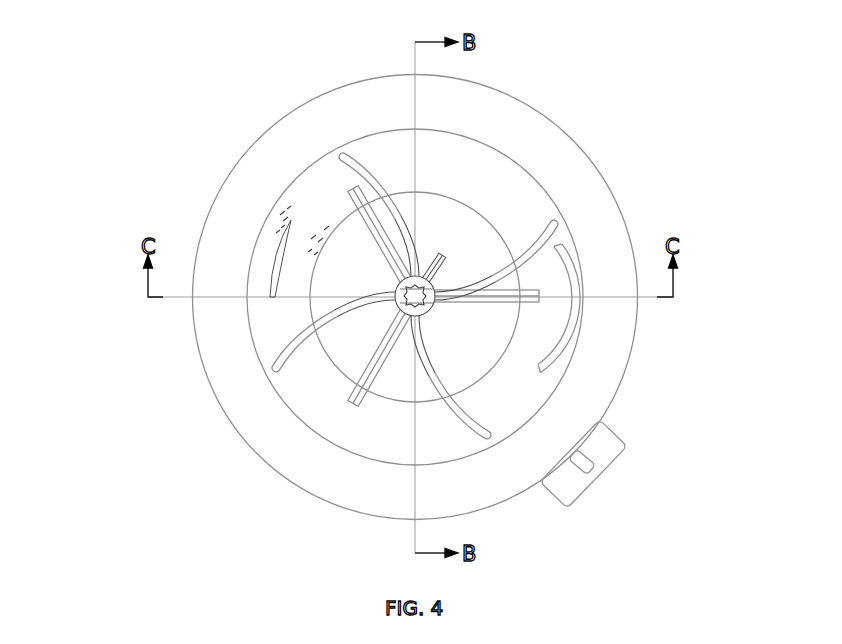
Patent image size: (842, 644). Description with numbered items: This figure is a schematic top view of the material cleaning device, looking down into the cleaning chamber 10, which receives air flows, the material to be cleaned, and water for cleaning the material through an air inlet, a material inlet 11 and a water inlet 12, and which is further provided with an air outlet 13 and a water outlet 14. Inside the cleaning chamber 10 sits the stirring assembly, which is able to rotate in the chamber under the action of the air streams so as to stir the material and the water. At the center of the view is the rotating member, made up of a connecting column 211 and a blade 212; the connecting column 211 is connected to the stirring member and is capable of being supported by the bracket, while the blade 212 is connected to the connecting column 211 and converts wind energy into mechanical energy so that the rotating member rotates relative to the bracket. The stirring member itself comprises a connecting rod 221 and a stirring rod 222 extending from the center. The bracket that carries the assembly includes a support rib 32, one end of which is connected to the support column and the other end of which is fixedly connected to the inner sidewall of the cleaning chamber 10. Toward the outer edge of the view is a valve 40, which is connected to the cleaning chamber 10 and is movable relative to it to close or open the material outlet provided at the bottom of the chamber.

The cleaning chamber 10 is at (503, 128).
The material inlet 11 is at (562, 257).
The water inlet 12 is at (273, 268).
The air outlet 13 is at (281, 216).
The water outlet 14 is at (321, 230).
The support rib 32 is at (370, 375).
The valve 40 is at (597, 460).
The connecting column 211 is at (422, 302).
The blade 212 is at (440, 412).
The connecting rod 221 is at (419, 299).
The stirring rod 222 is at (433, 268).